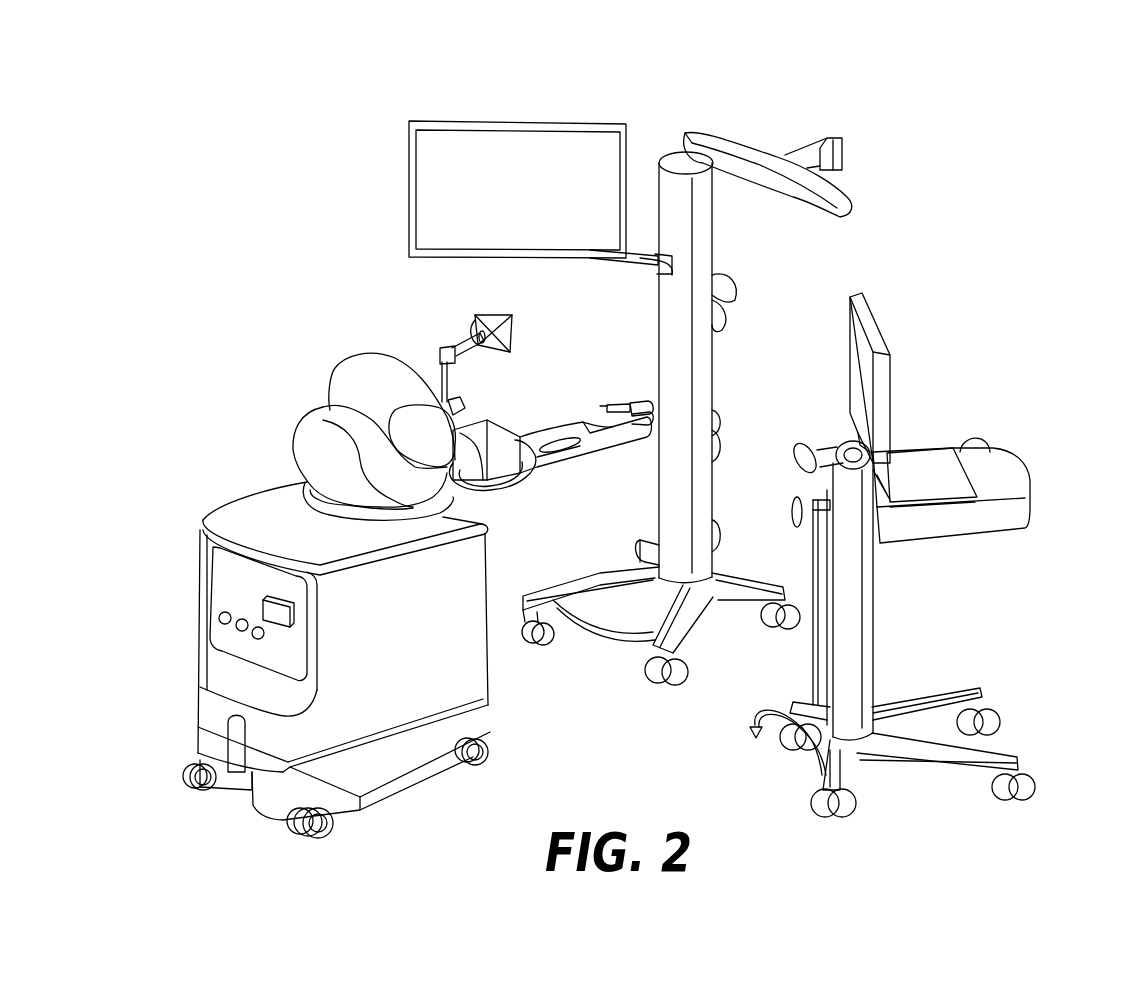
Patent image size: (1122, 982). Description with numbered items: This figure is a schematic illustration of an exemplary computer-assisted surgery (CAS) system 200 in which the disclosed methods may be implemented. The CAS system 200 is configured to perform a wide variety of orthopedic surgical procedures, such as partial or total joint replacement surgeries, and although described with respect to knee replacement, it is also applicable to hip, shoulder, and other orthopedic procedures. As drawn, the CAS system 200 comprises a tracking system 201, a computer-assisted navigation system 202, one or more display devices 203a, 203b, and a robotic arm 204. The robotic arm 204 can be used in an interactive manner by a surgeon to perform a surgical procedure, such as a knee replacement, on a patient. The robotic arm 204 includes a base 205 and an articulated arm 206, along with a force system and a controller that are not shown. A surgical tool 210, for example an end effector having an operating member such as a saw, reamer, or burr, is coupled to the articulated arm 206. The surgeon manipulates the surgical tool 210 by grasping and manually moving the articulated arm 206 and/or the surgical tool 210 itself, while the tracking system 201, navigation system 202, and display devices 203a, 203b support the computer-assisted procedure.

The computer-assisted surgery (CAS) system 200 is at (270, 141).
The tracking system 201 is at (748, 136).
The computer-assisted navigation system 202 is at (1027, 466).
The display device 203a is at (513, 120).
The display device 203b is at (876, 318).
The robotic arm 204 is at (199, 475).
The base 205 is at (487, 680).
The articulated arm 206 is at (555, 425).
The surgical tool 210 is at (637, 400).